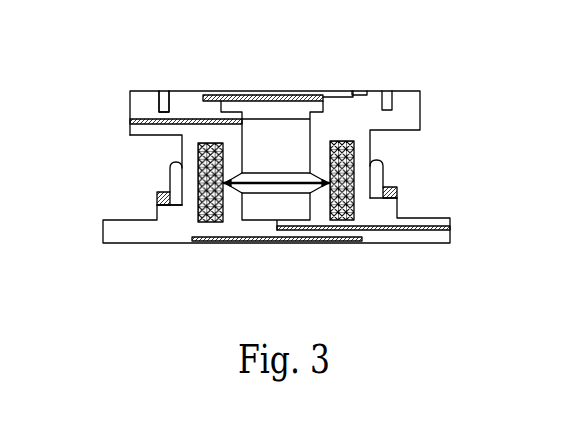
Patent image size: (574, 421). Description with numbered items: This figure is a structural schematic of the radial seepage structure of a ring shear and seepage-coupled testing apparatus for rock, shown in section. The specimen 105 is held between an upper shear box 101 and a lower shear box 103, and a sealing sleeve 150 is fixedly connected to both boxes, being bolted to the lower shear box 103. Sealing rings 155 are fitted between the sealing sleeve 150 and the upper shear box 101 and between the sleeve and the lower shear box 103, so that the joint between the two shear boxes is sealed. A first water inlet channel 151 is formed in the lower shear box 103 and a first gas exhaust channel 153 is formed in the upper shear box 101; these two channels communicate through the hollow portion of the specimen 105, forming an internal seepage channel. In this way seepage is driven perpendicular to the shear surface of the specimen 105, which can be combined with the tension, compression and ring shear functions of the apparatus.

The upper shear box 101 is at (363, 108).
The lower shear box 103 is at (384, 220).
The specimen 105 is at (213, 150).
The sealing sleeve 150 is at (376, 176).
The first water inlet channel 151 is at (422, 229).
The first gas exhaust channel 153 is at (171, 121).
The sealing rings 155 is at (172, 192).